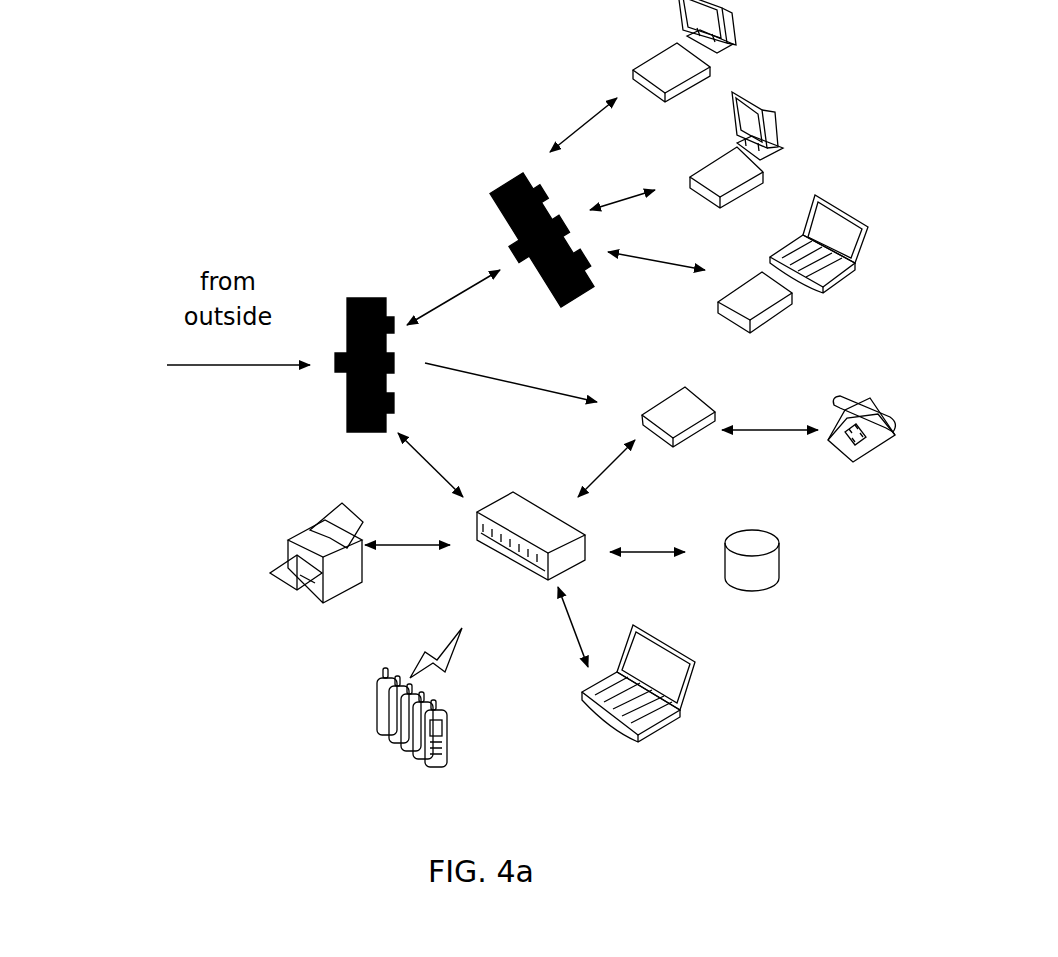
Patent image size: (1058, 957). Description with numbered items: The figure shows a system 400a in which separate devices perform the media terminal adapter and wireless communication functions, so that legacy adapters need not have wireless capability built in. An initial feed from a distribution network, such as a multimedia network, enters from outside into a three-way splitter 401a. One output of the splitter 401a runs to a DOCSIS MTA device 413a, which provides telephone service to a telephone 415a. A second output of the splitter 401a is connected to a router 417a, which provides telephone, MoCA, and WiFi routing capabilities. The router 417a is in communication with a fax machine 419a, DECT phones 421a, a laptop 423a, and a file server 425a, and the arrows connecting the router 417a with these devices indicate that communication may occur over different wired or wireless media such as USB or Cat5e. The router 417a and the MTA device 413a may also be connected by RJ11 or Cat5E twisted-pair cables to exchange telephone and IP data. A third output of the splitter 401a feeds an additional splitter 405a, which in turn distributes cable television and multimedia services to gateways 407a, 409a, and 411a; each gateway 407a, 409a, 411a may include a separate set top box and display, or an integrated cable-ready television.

The system 400a is at (177, 163).
The three-way splitter 401a is at (372, 347).
The additional splitter 405a is at (535, 232).
The gateway 407a is at (713, 51).
The gateway 409a is at (775, 150).
The gateway 411a is at (803, 267).
The DOCSIS MTA device 413a is at (679, 402).
The telephone 415a is at (863, 417).
The router 417a is at (531, 521).
The fax machine 419a is at (301, 567).
The DECT phone 421a is at (413, 705).
The laptop 423a is at (640, 697).
The file server 425a is at (757, 574).